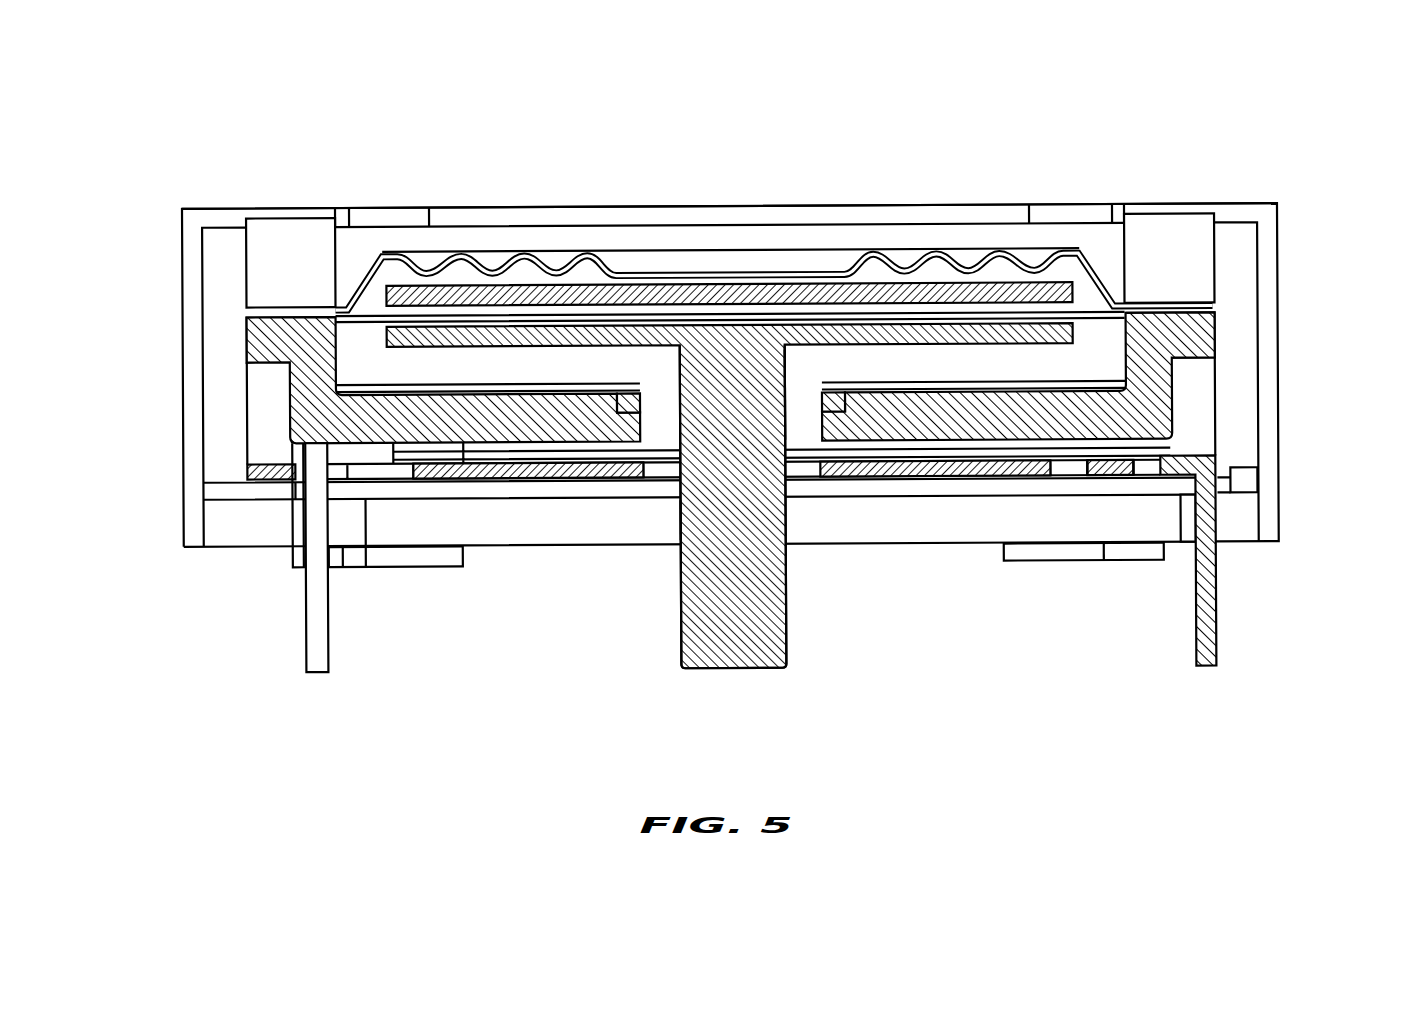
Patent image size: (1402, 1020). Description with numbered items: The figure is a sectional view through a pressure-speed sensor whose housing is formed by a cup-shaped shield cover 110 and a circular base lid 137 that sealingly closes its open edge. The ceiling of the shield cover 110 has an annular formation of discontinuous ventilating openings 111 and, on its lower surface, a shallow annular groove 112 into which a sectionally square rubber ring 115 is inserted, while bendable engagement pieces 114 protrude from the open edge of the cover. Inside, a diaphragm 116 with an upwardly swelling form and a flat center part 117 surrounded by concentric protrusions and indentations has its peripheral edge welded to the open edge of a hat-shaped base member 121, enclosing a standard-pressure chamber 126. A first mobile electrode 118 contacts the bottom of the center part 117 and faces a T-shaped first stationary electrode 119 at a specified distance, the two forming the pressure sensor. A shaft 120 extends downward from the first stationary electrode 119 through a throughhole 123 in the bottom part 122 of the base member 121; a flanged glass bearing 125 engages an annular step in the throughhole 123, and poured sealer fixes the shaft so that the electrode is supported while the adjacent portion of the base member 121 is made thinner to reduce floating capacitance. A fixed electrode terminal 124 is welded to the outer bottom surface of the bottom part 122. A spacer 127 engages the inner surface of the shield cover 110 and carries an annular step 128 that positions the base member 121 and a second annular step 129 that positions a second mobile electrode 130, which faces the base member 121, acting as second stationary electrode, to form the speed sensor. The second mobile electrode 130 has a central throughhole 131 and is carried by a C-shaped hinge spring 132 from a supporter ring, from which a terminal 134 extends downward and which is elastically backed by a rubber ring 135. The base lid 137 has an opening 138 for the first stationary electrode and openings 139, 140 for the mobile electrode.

The shield cover 110 is at (665, 218).
The ventilating openings 111 is at (392, 215).
The annular groove 112 is at (338, 230).
The engagement pieces 114 is at (438, 558).
The rubber ring 115 is at (290, 240).
The diaphragm 116 is at (560, 262).
The center part 117 is at (728, 275).
The first mobile electrode 118 is at (860, 292).
The first stationary electrode 119 is at (518, 347).
The shaft 120 is at (735, 670).
The base member 121 is at (467, 430).
The bottom part 122 is at (898, 383).
The throughhole 123 is at (852, 400).
The fixed electrode terminal 124 is at (318, 668).
The bearing 125 is at (805, 423).
The standard-pressure chamber 126 is at (588, 372).
The spacer 127 is at (220, 240).
The annular step 128 is at (265, 368).
The annular step 129 is at (255, 452).
The second mobile electrode 130 is at (897, 477).
The throughhole 131 is at (655, 468).
The hinge spring 132 is at (1107, 477).
The terminal 134 is at (1205, 670).
The rubber ring 135 is at (245, 493).
The base lid 137 is at (400, 523).
The opening 138 is at (685, 520).
The opening 139 is at (347, 527).
The opening 140 is at (1183, 542).